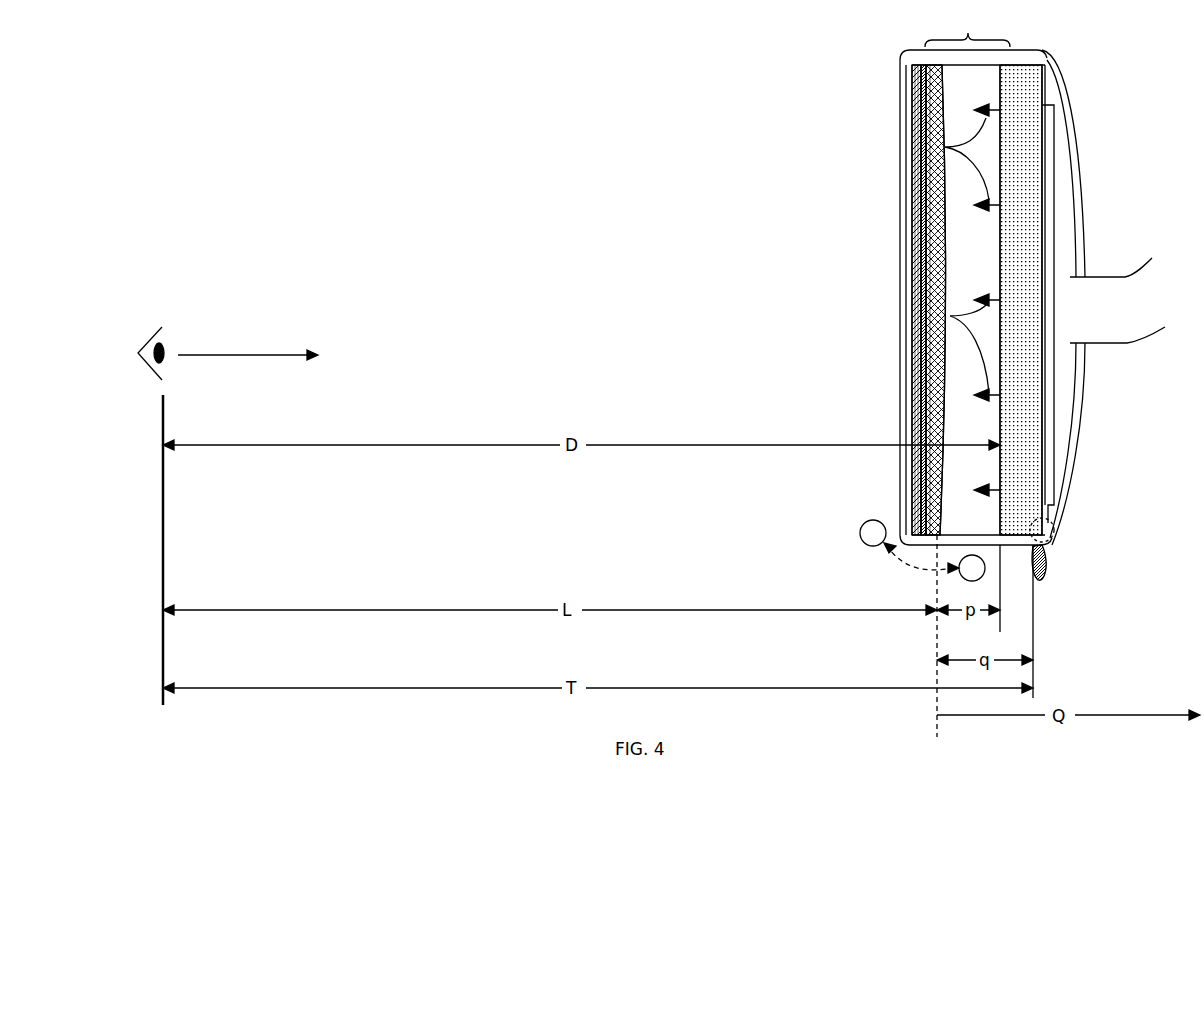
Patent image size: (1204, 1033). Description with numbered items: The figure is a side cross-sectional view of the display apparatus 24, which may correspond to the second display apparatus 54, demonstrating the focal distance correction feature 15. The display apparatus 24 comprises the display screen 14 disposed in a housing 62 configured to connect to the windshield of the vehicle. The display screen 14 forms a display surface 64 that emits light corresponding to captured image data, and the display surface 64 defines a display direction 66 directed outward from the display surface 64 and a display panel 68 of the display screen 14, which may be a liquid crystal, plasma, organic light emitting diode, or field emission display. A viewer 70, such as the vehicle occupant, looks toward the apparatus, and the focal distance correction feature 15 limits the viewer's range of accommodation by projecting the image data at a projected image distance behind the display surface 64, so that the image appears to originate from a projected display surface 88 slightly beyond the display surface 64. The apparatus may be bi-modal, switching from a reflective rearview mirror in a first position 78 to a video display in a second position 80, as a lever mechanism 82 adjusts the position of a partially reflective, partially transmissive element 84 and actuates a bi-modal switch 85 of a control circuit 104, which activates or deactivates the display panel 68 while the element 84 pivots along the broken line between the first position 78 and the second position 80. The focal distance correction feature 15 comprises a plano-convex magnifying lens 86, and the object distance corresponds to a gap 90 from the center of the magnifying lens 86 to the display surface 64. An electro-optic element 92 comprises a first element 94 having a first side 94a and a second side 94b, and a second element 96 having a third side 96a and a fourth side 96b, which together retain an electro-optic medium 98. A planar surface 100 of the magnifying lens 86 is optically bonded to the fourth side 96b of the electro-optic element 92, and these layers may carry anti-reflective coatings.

The display screen 14 is at (1000, 262).
The focal distance correction feature 15 is at (967, 28).
The display apparatus 24 is at (911, 306).
The second display apparatus 54 is at (752, 184).
The housing 62 is at (1060, 85).
The display surface 64 is at (914, 78).
The display direction 66 is at (945, 147).
The display panel 68 is at (1023, 95).
The viewer 70 is at (165, 350).
The first position 78 is at (906, 545).
The second position 80 is at (967, 568).
The lever mechanism 82 is at (1048, 565).
The partially reflective, partially transmissive element 84 is at (906, 414).
The bi-modal switch 85 is at (1050, 535).
The magnifying lens 86 is at (928, 238).
The projected display surface 88 is at (1033, 623).
The gap 90 is at (953, 618).
The electro-optic element 92 is at (910, 62).
The first element 94 is at (916, 92).
The first side 94a is at (916, 186).
The second side 94b is at (926, 210).
The second element 96 is at (916, 120).
The third side 96a is at (916, 350).
The fourth side 96b is at (928, 375).
The electro-optic medium 98 is at (920, 462).
The planar surface 100 is at (925, 495).
The control circuit 104 is at (1045, 463).